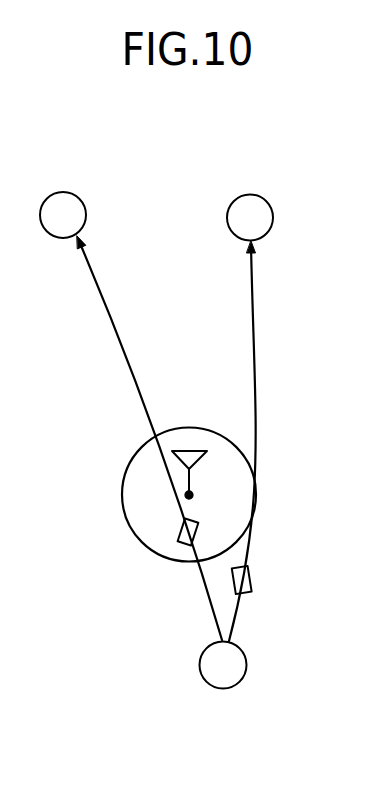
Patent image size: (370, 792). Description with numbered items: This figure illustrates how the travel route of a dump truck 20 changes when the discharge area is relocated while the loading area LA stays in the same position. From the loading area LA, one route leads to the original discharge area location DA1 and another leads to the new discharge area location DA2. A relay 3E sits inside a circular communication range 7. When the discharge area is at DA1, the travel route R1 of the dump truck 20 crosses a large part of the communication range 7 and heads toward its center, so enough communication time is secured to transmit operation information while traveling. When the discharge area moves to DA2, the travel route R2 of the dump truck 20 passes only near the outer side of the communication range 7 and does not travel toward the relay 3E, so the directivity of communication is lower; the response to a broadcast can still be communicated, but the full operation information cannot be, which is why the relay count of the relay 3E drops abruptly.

The discharge area location DA1 is at (63, 192).
The discharge area location DA2 is at (249, 195).
The travel route R1 is at (117, 331).
The travel route R2 is at (257, 403).
The relay 3E is at (193, 450).
The communication range 7 is at (122, 490).
The dump truck 20 is at (178, 532).
The loading area LA is at (223, 688).